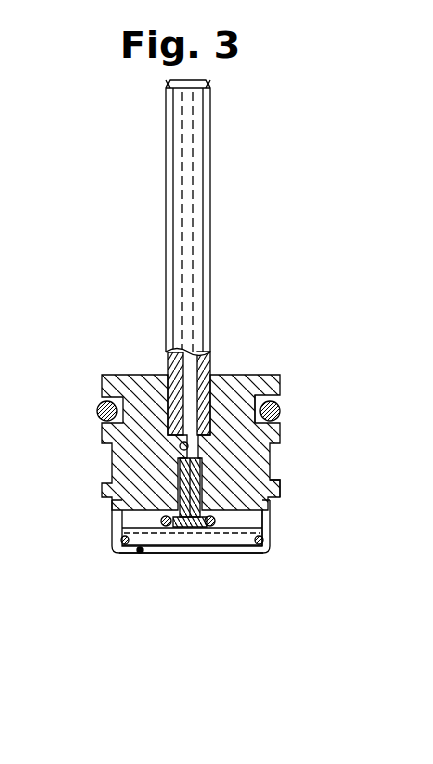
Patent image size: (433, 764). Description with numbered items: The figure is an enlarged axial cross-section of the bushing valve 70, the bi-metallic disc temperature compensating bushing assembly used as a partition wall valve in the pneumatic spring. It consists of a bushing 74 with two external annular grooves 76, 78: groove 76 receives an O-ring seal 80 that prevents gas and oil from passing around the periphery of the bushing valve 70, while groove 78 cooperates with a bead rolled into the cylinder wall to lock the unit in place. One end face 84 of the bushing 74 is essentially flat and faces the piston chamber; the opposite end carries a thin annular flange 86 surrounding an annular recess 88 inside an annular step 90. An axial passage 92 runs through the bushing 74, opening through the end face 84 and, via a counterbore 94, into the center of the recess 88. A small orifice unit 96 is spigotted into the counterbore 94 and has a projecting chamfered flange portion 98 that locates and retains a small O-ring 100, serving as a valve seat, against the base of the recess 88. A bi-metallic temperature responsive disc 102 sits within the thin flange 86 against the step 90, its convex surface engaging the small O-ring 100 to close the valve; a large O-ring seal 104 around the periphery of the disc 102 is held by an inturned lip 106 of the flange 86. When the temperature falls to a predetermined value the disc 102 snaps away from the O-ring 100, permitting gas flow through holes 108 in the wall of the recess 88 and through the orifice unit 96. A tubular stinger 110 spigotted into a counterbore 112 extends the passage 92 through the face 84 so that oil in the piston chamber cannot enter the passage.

The bushing valve 70 is at (256, 371).
The bushing 74 is at (268, 462).
The annular groove 76 is at (281, 399).
The annular groove 78 is at (280, 480).
The O-ring seal 80 is at (281, 413).
The end face 84 is at (224, 375).
The thin annular flange 86 is at (258, 555).
The annular recess 88 is at (268, 528).
The annular step 90 is at (263, 540).
The axial passage 92 is at (180, 446).
The counterbore 94 is at (178, 494).
The orifice unit 96 is at (178, 478).
The chamfered flange portion 98 is at (176, 534).
The small O-ring 100 is at (124, 519).
The bi-metallic temperature responsive disc 102 is at (221, 555).
The large O-ring seal 104 is at (112, 547).
The inturned lip 106 is at (148, 553).
The holes 108 is at (161, 519).
The stinger tube 110 is at (168, 178).
The counterbore 112 is at (170, 382).